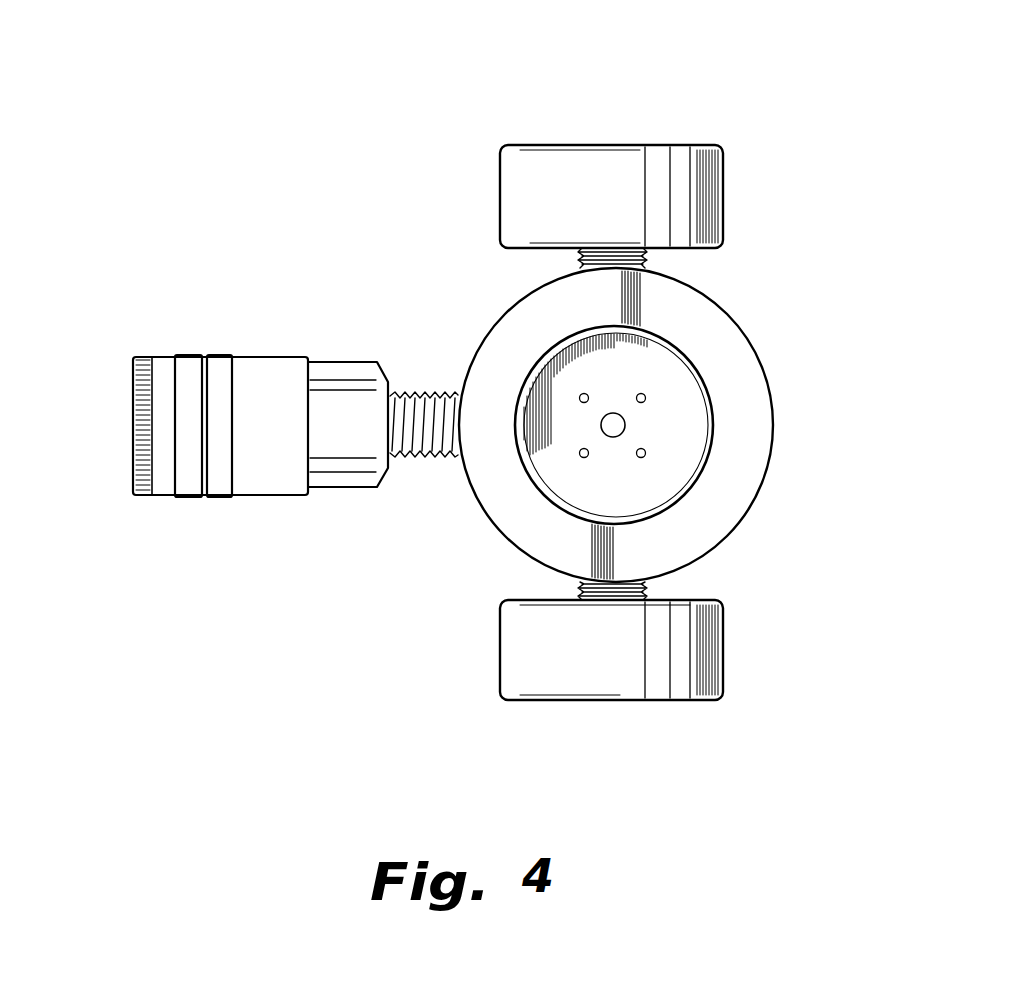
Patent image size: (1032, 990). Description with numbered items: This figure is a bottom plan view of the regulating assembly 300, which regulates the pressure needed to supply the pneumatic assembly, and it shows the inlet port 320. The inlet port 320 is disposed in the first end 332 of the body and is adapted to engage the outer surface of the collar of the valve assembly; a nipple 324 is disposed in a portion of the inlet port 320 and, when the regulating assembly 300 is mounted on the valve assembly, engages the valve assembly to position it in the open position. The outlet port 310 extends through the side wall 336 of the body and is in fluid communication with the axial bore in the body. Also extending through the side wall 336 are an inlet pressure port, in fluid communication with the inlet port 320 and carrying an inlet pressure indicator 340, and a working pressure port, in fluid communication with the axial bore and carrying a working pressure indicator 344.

The regulating assembly 300 is at (780, 126).
The outlet port 310 is at (133, 446).
The inlet port 320 is at (677, 442).
The nipple 324 is at (618, 424).
The first end 332 is at (715, 362).
The side wall 336 is at (722, 310).
The inlet pressure indicator 340 is at (623, 700).
The working pressure indicator 344 is at (625, 147).